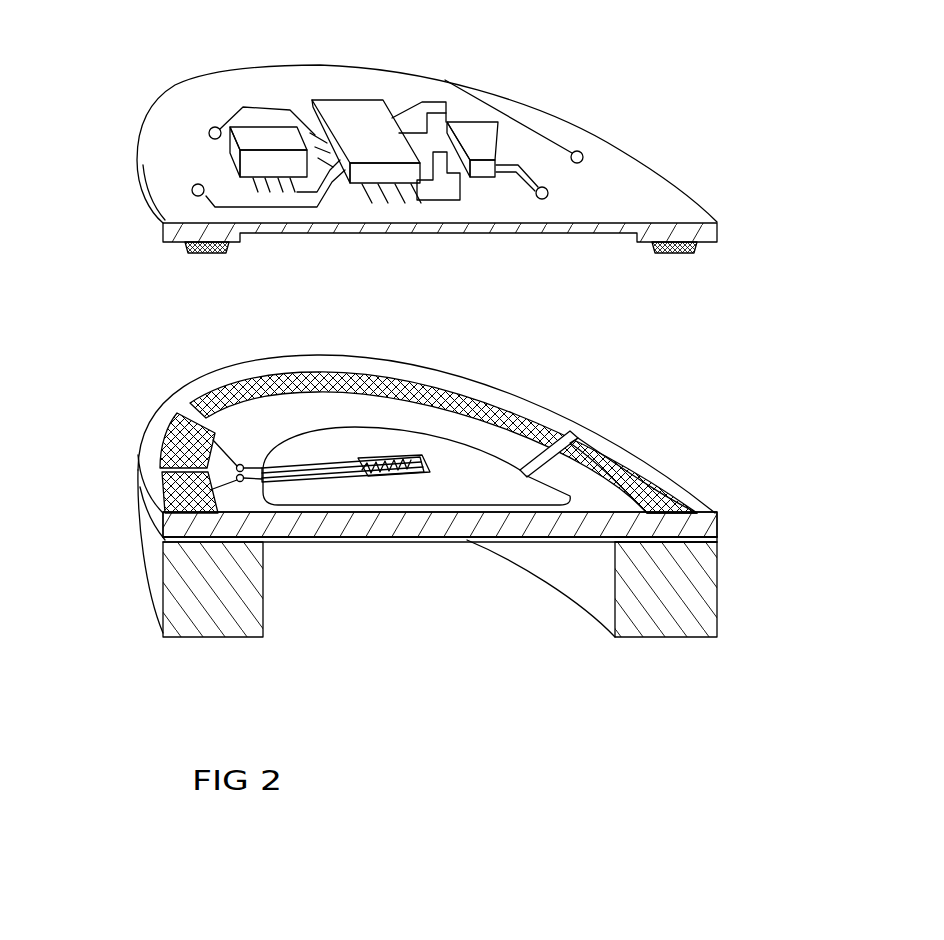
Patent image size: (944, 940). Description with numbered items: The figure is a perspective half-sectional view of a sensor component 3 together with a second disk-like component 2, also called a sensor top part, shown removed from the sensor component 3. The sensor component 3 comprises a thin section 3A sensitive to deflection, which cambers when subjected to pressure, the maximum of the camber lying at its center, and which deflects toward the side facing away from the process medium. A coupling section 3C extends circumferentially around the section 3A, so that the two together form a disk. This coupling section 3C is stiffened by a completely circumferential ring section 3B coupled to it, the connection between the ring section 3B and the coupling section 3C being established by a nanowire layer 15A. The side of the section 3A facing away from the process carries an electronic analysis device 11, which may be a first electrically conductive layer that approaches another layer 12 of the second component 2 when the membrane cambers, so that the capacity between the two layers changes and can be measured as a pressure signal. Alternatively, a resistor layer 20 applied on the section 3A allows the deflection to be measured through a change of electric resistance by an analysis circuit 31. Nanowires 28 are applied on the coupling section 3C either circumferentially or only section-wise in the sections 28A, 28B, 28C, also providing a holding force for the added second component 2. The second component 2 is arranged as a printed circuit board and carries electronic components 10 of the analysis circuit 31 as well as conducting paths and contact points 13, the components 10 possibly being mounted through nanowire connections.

The second disk-like component 2 is at (773, 65).
The sensor component 3 is at (830, 510).
The section sensitive to deflection 3A is at (367, 527).
The ring section 3B is at (180, 612).
The coupling section 3C is at (180, 528).
The electronic components 10 is at (373, 108).
The electronic analysis device 11 is at (482, 483).
The layer 12 is at (562, 235).
The contact points 13 is at (583, 152).
The nanowire layer 15A is at (690, 546).
The resistor layer 20 is at (413, 482).
The nanowires 28 is at (201, 254).
The first nanowire section 28A is at (160, 443).
The second nanowire section 28B is at (165, 488).
The third nanowire section 28C is at (627, 457).
The analysis circuit 31 is at (338, 113).